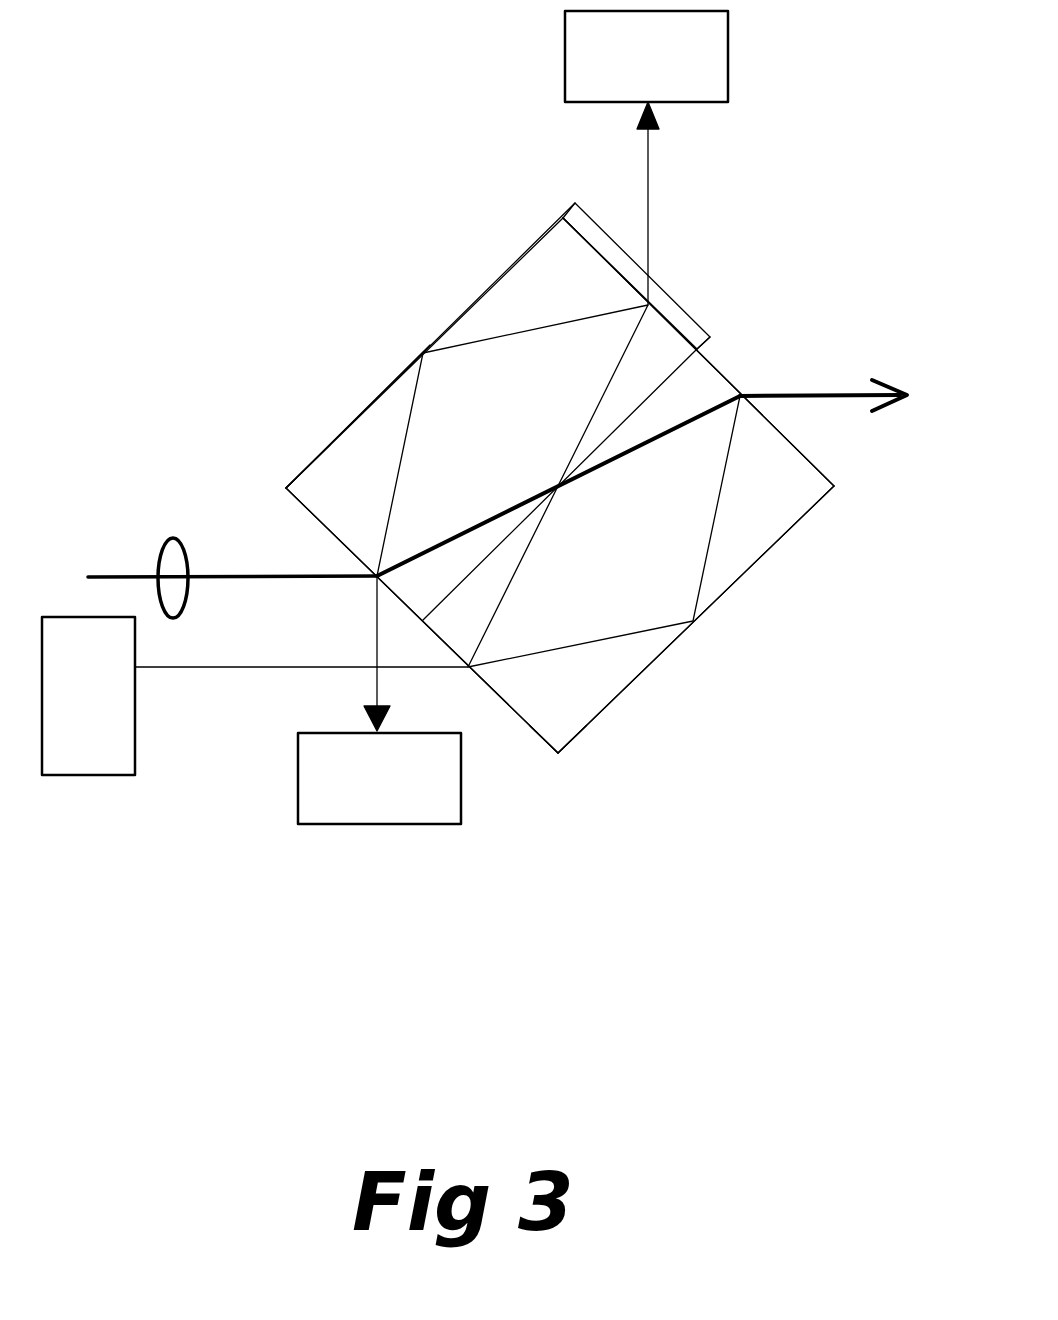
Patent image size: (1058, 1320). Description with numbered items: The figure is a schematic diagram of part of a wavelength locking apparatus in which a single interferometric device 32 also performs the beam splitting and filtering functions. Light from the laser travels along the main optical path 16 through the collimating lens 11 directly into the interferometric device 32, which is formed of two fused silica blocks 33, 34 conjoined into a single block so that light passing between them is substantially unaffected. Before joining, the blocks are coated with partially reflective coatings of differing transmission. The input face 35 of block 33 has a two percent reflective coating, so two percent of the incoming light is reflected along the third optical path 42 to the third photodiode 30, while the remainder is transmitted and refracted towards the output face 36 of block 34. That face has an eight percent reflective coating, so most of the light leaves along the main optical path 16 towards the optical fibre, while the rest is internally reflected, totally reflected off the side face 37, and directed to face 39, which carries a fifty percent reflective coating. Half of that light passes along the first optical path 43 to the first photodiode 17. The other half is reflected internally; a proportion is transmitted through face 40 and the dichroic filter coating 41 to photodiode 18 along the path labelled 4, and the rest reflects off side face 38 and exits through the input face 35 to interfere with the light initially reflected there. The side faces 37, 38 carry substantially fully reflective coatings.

The reference beam to second photodetector 4 is at (650, 200).
The collimating lens 11 is at (158, 550).
The main optical path 16 is at (246, 573).
The first photodiode 17 is at (81, 775).
The photodiode 18 is at (730, 61).
The third photodiode 30 is at (375, 824).
The interferometric device 32 is at (767, 508).
The block 33 is at (507, 266).
The block 34 is at (583, 733).
The input face 35 is at (305, 508).
The output face 36 is at (718, 368).
The side face 37 is at (720, 600).
The side face 38 is at (347, 420).
The face 39 is at (520, 720).
The face 40 is at (672, 325).
The dichroic filter coating 41 is at (606, 240).
The third optical path 42 is at (373, 631).
The first optical path 43 is at (246, 665).